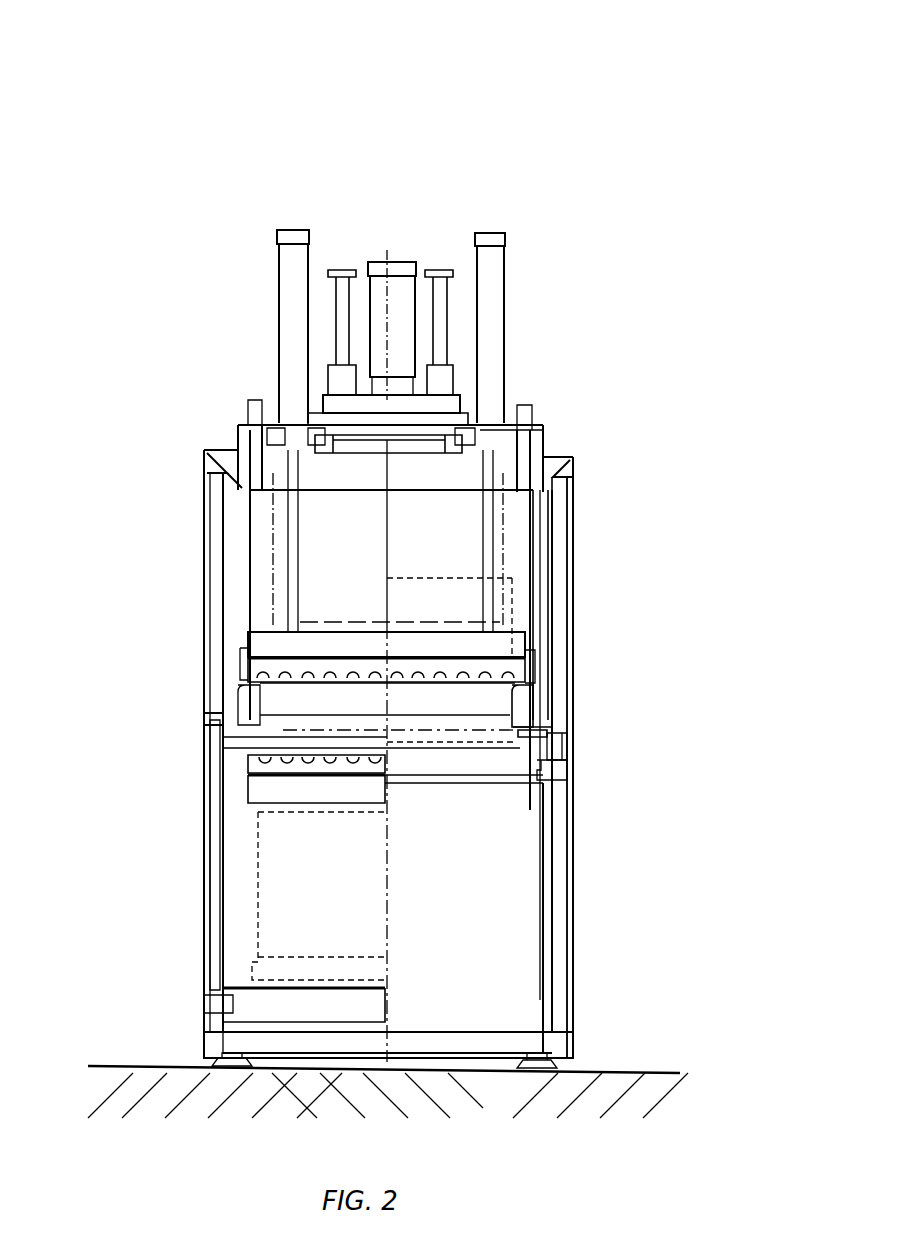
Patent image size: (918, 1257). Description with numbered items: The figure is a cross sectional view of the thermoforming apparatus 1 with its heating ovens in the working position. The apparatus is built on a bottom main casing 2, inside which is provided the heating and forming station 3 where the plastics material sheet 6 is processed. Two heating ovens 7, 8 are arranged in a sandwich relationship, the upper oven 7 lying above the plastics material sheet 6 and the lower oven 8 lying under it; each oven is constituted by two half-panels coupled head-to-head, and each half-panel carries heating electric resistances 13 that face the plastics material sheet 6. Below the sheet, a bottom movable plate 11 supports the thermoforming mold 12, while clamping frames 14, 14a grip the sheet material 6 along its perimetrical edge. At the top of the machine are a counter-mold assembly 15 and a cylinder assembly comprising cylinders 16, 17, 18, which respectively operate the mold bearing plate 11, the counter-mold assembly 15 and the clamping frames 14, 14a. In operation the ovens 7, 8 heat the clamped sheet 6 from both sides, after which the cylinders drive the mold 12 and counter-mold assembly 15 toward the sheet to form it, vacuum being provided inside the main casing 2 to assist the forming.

The thermoforming apparatus 1 is at (548, 453).
The bottom main casing 2 is at (543, 987).
The heating and forming station 3 is at (387, 912).
The plastics material sheet 6 is at (427, 728).
The heating oven 7 is at (263, 642).
The heating oven 8 is at (263, 782).
The bottom movable plate 11 is at (287, 1012).
The thermoforming mold 12 is at (317, 912).
The heating electric resistances 13 is at (258, 758).
The clamping frame 14 is at (510, 708).
The clamping frame 14a is at (548, 730).
The counter-mold assembly 15 is at (407, 447).
The cylinder 16 is at (562, 515).
The cylinder 17 is at (400, 332).
The cylinder 18 is at (488, 333).